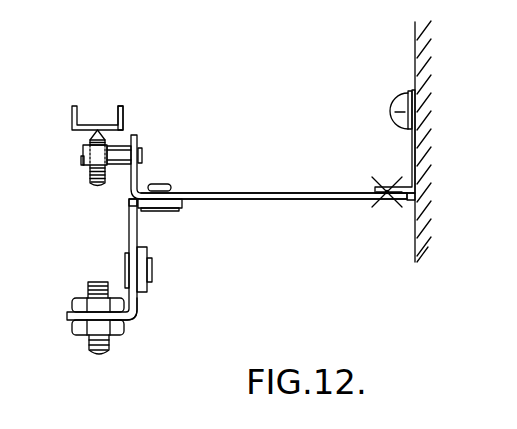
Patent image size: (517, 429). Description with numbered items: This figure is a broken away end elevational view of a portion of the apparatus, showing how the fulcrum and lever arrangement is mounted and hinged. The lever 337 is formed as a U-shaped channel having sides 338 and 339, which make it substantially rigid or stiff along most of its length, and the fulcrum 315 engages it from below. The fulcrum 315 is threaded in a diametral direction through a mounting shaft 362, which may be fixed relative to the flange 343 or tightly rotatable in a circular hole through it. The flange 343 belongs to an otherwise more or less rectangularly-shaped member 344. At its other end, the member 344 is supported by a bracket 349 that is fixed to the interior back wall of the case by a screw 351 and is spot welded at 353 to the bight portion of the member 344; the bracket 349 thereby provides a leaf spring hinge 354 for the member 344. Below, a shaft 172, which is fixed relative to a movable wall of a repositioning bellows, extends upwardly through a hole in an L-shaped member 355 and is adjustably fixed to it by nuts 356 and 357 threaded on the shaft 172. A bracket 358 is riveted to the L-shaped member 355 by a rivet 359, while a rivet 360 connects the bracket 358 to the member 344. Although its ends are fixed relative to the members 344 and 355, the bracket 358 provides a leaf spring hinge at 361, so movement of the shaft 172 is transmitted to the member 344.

The shaft 172 is at (89, 343).
The fulcrum 315 is at (89, 183).
The lever 337 is at (98, 121).
The side 338 is at (121, 113).
The side 339 is at (72, 113).
The flange 343 is at (141, 174).
The member 344 is at (227, 191).
The bracket 349 is at (411, 141).
The screw 351 is at (398, 104).
The spot weld 353 is at (384, 201).
The leaf spring hinge 354 is at (413, 196).
The L-shaped member 355 is at (140, 294).
The nut 356 is at (72, 301).
The nut 357 is at (72, 326).
The bracket 358 is at (130, 229).
The rivet 359 is at (152, 266).
The rivet 360 is at (165, 212).
The leaf spring hinge 361 is at (129, 201).
The mounting shaft 362 is at (83, 156).